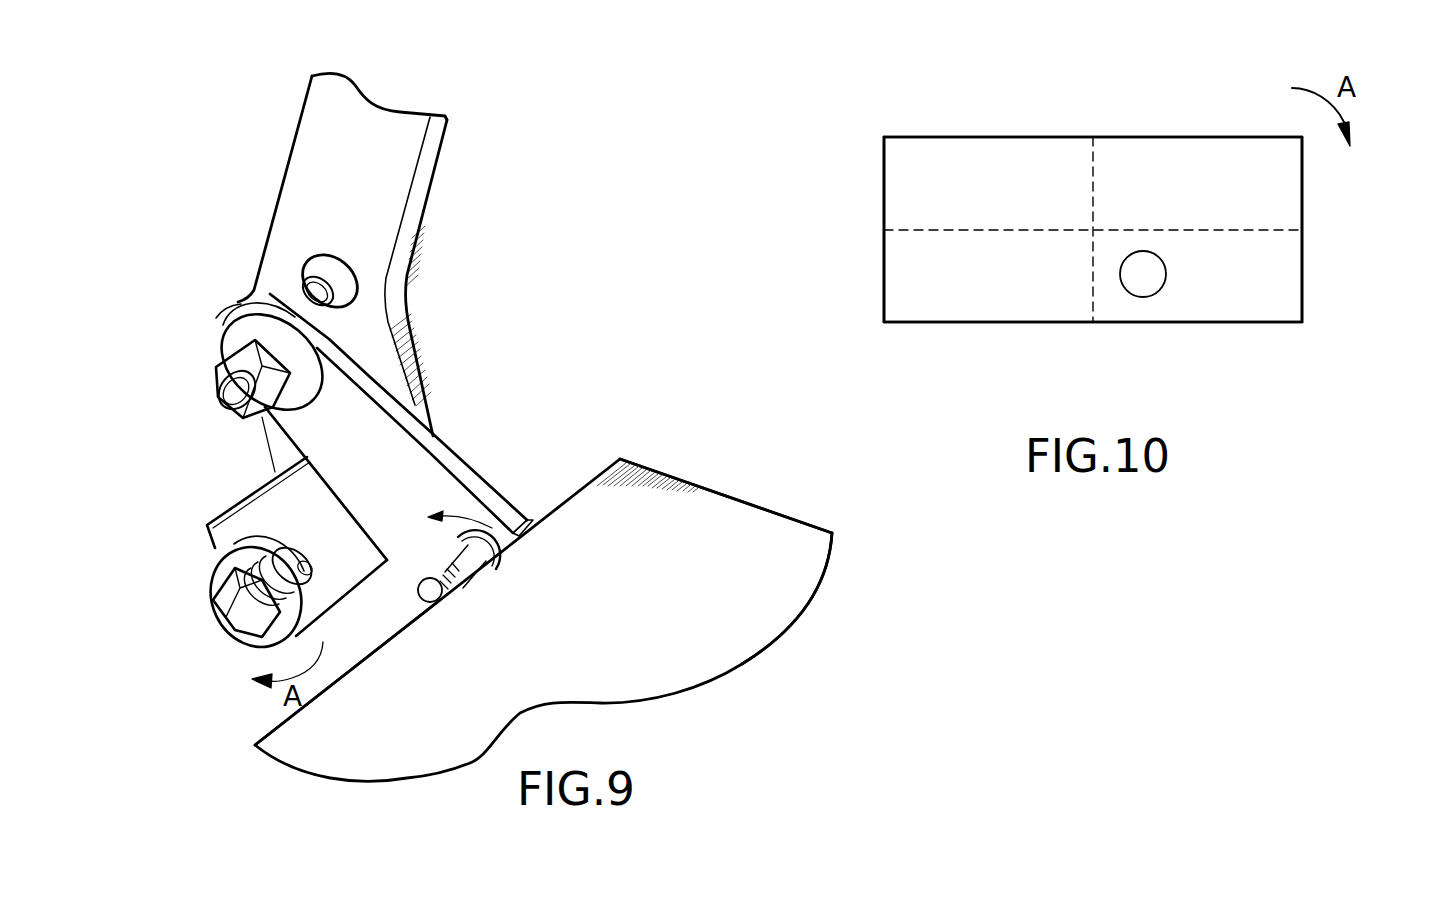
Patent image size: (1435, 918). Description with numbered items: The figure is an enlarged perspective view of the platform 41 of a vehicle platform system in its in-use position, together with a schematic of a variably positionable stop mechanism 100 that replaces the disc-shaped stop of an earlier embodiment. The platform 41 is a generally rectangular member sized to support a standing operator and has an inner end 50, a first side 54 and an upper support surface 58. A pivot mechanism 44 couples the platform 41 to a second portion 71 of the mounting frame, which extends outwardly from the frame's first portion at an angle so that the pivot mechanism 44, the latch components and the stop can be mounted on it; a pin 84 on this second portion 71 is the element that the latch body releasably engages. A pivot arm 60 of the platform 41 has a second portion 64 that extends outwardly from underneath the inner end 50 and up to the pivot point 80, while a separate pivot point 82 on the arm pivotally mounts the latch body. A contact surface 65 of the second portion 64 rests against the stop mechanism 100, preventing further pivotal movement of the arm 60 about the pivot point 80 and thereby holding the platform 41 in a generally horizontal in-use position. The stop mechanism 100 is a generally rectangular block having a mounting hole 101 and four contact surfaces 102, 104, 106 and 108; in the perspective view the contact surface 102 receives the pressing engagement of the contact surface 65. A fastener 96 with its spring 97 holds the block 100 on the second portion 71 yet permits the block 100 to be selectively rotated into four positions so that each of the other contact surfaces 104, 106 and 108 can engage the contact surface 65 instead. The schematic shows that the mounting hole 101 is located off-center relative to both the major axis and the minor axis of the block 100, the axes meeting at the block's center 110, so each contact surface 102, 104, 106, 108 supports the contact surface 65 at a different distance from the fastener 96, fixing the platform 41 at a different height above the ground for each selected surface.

In FIG. 9, the platform 41 is at (786, 528).
In FIG. 9, the pivot mechanism 44 is at (508, 547).
In FIG. 9, the inner end 50 is at (332, 685).
In FIG. 9, the first side 54 is at (742, 505).
In FIG. 9, the upper support surface 58 is at (654, 625).
In FIG. 9, the pivot arm 60 is at (426, 563).
In FIG. 9, the second portion 64 is at (356, 448).
In FIG. 9, the contact surface 65 is at (329, 473).
In FIG. 9, the second portion 71 is at (325, 205).
In FIG. 9, the pivot point 80 is at (276, 303).
In FIG. 9, the pivot point 82 is at (411, 597).
In FIG. 9, the pin 84 is at (336, 272).
In FIG. 9, the fastener 96 is at (238, 607).
In FIG. 9, the spring 97 is at (283, 555).
In FIG. 9, the stop mechanism 100 is at (224, 537).
In FIG. 10, the stop mechanism 100 is at (1200, 122).
In FIG. 9, the mounting hole 101 is at (300, 565).
In FIG. 10, the mounting hole 101 is at (1142, 297).
In FIG. 9, the contact surface 102 is at (327, 508).
In FIG. 10, the contact surface 102 is at (970, 136).
In FIG. 9, the contact surface 104 is at (278, 463).
In FIG. 10, the contact surface 104 is at (884, 187).
In FIG. 10, the contact surface 106 is at (1302, 186).
In FIG. 10, the contact surface 108 is at (957, 323).
In FIG. 10, the center 110 is at (1096, 230).